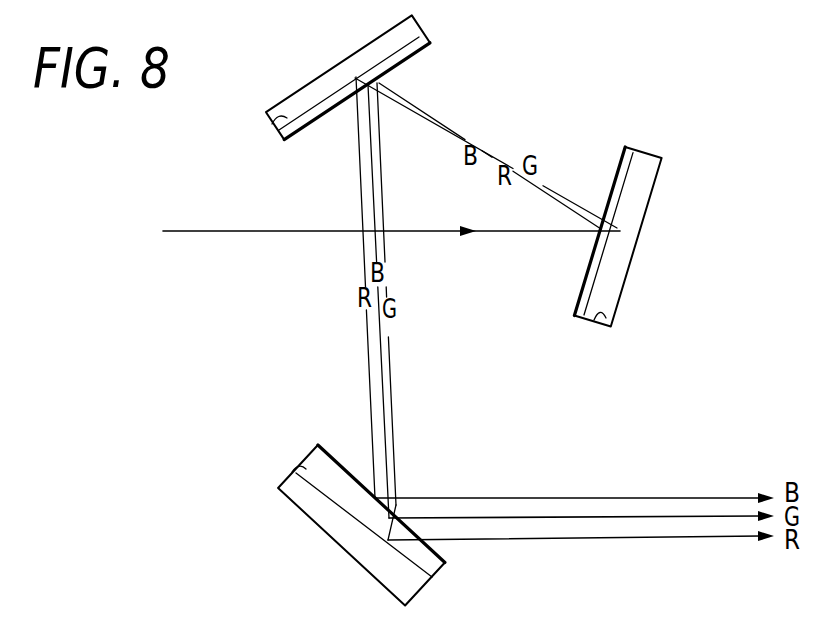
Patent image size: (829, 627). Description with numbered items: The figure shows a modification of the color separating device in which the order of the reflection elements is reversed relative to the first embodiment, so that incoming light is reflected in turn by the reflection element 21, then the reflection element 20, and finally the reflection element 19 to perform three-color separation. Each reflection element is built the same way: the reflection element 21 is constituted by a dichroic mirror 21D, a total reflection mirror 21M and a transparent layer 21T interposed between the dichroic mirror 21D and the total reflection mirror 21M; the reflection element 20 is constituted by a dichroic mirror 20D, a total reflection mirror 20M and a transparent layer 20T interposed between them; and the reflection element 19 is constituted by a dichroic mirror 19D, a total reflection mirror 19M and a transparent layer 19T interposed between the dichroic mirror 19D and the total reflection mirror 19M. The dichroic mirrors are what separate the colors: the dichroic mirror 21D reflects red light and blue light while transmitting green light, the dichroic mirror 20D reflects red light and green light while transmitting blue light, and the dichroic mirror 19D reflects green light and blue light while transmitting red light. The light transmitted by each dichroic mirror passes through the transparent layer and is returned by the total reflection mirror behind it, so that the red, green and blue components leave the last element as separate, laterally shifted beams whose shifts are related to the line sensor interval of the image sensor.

The reflection element 19 is at (365, 493).
The total reflection mirror 19M is at (297, 473).
The dichroic mirror 19D is at (320, 447).
The transparent layer 19T is at (418, 558).
The reflection element 20 is at (351, 104).
The total reflection mirror 20M is at (268, 118).
The dichroic mirror 20D is at (298, 133).
The transparent layer 20T is at (418, 40).
The reflection element 21 is at (617, 237).
The total reflection mirror 21M is at (604, 312).
The dichroic mirror 21D is at (575, 302).
The transparent layer 21T is at (633, 153).